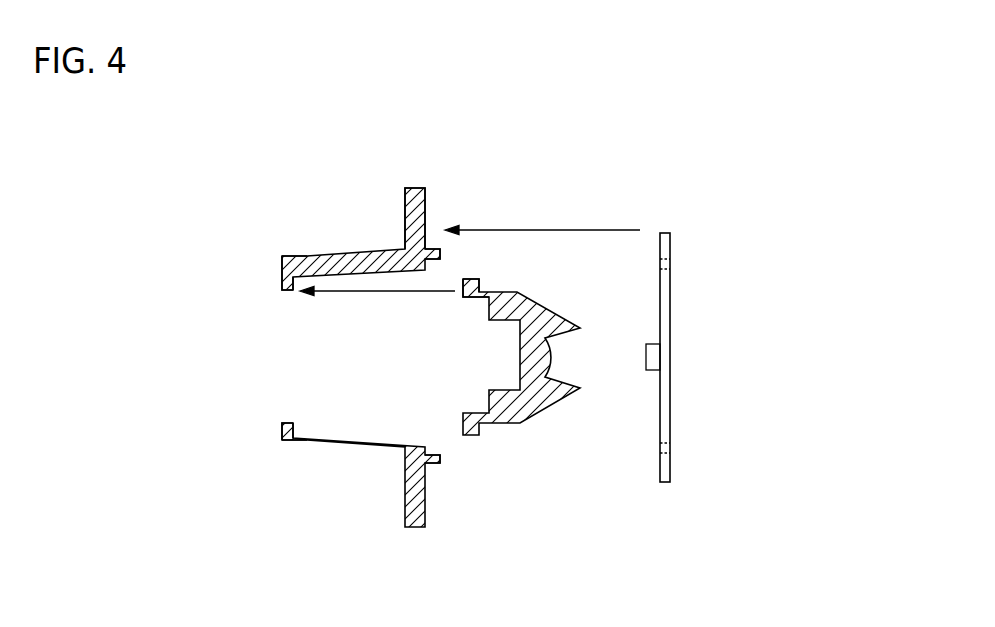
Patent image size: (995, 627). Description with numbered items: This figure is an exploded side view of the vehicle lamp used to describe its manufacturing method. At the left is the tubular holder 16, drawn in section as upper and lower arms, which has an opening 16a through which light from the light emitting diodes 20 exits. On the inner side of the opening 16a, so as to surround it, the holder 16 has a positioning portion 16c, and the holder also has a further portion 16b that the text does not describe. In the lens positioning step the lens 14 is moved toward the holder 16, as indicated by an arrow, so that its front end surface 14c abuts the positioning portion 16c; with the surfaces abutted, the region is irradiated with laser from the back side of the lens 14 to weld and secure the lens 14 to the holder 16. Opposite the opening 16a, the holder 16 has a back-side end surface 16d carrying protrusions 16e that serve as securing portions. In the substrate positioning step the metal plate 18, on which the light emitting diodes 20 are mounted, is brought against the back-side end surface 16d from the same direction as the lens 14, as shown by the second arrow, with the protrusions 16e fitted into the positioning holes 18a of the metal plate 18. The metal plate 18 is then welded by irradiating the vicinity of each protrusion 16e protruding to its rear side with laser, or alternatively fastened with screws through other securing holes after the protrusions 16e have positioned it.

The lens 14 is at (527, 425).
The front end surface of the lens 14c is at (463, 281).
The holder 16 is at (343, 253).
The opening 16a is at (274, 349).
The end portion of spring member 16b is at (280, 283).
The positioning portion 16c is at (305, 272).
The back-side end surface 16d is at (428, 205).
The protrusions 16e is at (433, 250).
The metal plate 18 is at (672, 325).
The positioning holes 18a is at (668, 265).
The light emitting diodes 20 is at (650, 370).